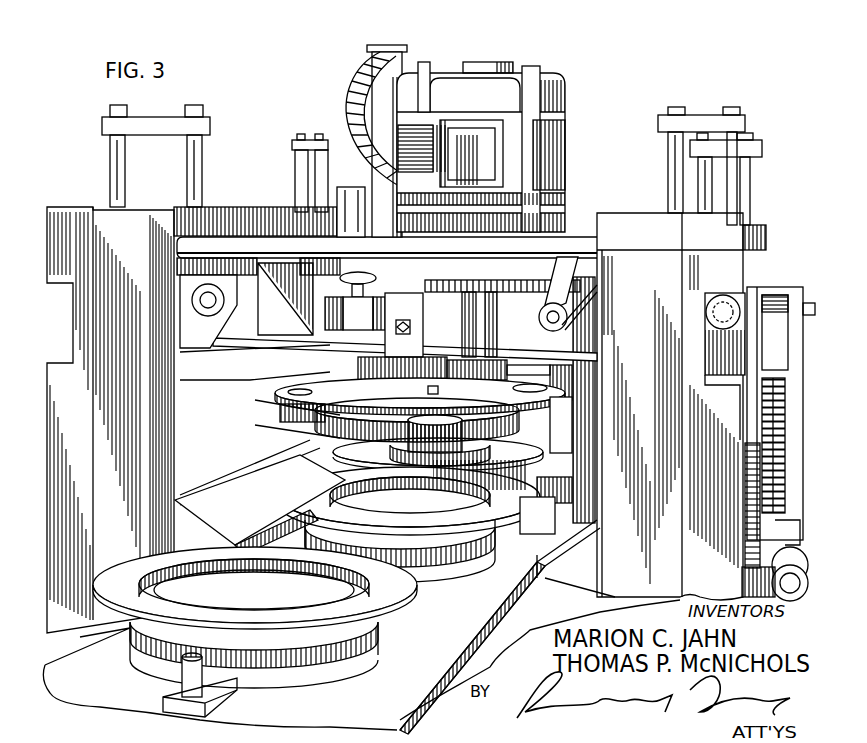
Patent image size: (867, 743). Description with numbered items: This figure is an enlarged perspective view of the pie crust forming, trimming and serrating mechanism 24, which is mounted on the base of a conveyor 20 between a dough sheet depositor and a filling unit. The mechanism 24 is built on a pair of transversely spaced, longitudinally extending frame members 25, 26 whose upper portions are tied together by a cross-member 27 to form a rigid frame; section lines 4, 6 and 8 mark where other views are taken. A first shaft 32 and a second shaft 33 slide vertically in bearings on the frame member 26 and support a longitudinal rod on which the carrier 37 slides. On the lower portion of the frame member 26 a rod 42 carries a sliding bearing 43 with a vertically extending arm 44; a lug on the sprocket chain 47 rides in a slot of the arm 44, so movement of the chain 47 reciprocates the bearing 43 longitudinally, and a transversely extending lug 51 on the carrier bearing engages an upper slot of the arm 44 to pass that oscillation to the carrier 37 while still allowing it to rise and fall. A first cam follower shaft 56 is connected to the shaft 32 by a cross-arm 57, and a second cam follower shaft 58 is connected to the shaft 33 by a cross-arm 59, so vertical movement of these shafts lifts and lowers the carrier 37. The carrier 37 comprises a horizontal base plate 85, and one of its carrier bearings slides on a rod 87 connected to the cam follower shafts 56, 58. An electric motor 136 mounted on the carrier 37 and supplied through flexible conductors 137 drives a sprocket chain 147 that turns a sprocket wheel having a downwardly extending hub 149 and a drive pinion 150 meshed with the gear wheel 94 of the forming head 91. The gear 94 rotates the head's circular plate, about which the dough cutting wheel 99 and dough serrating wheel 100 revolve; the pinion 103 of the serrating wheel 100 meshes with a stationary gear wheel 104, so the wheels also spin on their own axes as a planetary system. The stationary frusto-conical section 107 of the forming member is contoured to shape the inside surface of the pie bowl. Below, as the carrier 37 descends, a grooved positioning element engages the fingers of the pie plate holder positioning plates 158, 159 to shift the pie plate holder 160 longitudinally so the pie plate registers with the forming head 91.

The section line 4- 4 is at (73, 8).
The section line 6- 6 is at (763, 32).
The section line 8- 8 is at (230, 448).
The conveyor 20 is at (518, 598).
The pie crust forming, trimming and serrating mechanism 24 is at (258, 100).
The frame member 25 is at (143, 318).
The frame member 26 is at (652, 311).
The cross-member 27 is at (387, 256).
The first shaft 32 is at (745, 172).
The second shaft 33 is at (752, 192).
The carrier 37 is at (354, 182).
The rod 42 is at (772, 584).
The bearing 43 is at (786, 556).
The arm 44 is at (790, 287).
The sprocket chain 47 is at (783, 435).
The lug 51 is at (788, 332).
The first cam follower shaft 56 is at (677, 205).
The cross-arm 57 is at (705, 115).
The second cam follower shaft 58 is at (705, 205).
The cross-arm 59 is at (755, 150).
The base plate 85 is at (510, 356).
The rod 87 is at (208, 308).
The forming head 91 is at (336, 440).
The gear wheel 94 is at (456, 379).
The dough cutting wheel 99 is at (513, 428).
The dough serrating wheel 100 is at (285, 430).
The pinion 103 is at (250, 395).
The stationary gear wheel 104 is at (370, 410).
The frusto-conical section 107 is at (365, 455).
The electric motor 136 is at (492, 101).
The flexible conductors 137 is at (352, 88).
The sprocket chain 147 is at (480, 287).
The hub 149 is at (499, 320).
The drive pinion 150 is at (525, 365).
The pie plate holder positioning plate 158 is at (547, 524).
The pie plate holder positioning plate 159 is at (260, 495).
The pie plate holder 160 is at (490, 527).